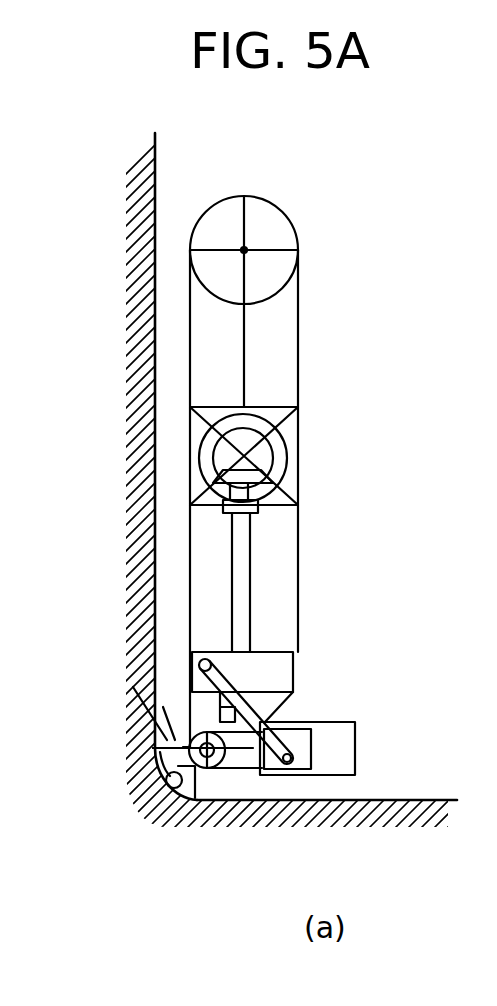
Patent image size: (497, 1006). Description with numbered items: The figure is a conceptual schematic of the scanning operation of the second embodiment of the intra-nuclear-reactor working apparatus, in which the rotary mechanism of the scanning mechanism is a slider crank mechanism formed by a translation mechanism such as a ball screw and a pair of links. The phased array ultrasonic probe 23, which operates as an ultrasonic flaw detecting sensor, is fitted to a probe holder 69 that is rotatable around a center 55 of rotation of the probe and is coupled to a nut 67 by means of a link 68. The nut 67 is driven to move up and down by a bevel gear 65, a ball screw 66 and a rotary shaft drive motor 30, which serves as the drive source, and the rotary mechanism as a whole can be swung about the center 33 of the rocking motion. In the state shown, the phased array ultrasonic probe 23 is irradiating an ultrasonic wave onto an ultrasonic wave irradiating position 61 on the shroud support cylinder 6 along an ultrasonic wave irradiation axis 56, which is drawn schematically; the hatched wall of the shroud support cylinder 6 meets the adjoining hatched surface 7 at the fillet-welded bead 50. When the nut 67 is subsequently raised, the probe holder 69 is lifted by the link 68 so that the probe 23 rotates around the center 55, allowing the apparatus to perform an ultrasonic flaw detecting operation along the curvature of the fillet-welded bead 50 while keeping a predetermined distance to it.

The shroud support cylinder 6 is at (160, 366).
The floor 7 is at (415, 797).
The phased array ultrasonic probe 23 is at (347, 740).
The rotary shaft drive motor 30 is at (298, 427).
The center of the rocking motion 33 is at (244, 249).
The fillet-welded bead 50 is at (152, 815).
The center of rotation of the probe 55 is at (198, 798).
The ultrasonic wave irradiation axis 56 is at (133, 687).
The ultrasonic wave irradiating position 61 is at (150, 738).
The bevel gear 65 is at (250, 476).
The ball screw 66 is at (245, 578).
The nut 67 is at (265, 652).
The link 68 is at (238, 700).
The probe holder 69 is at (225, 765).